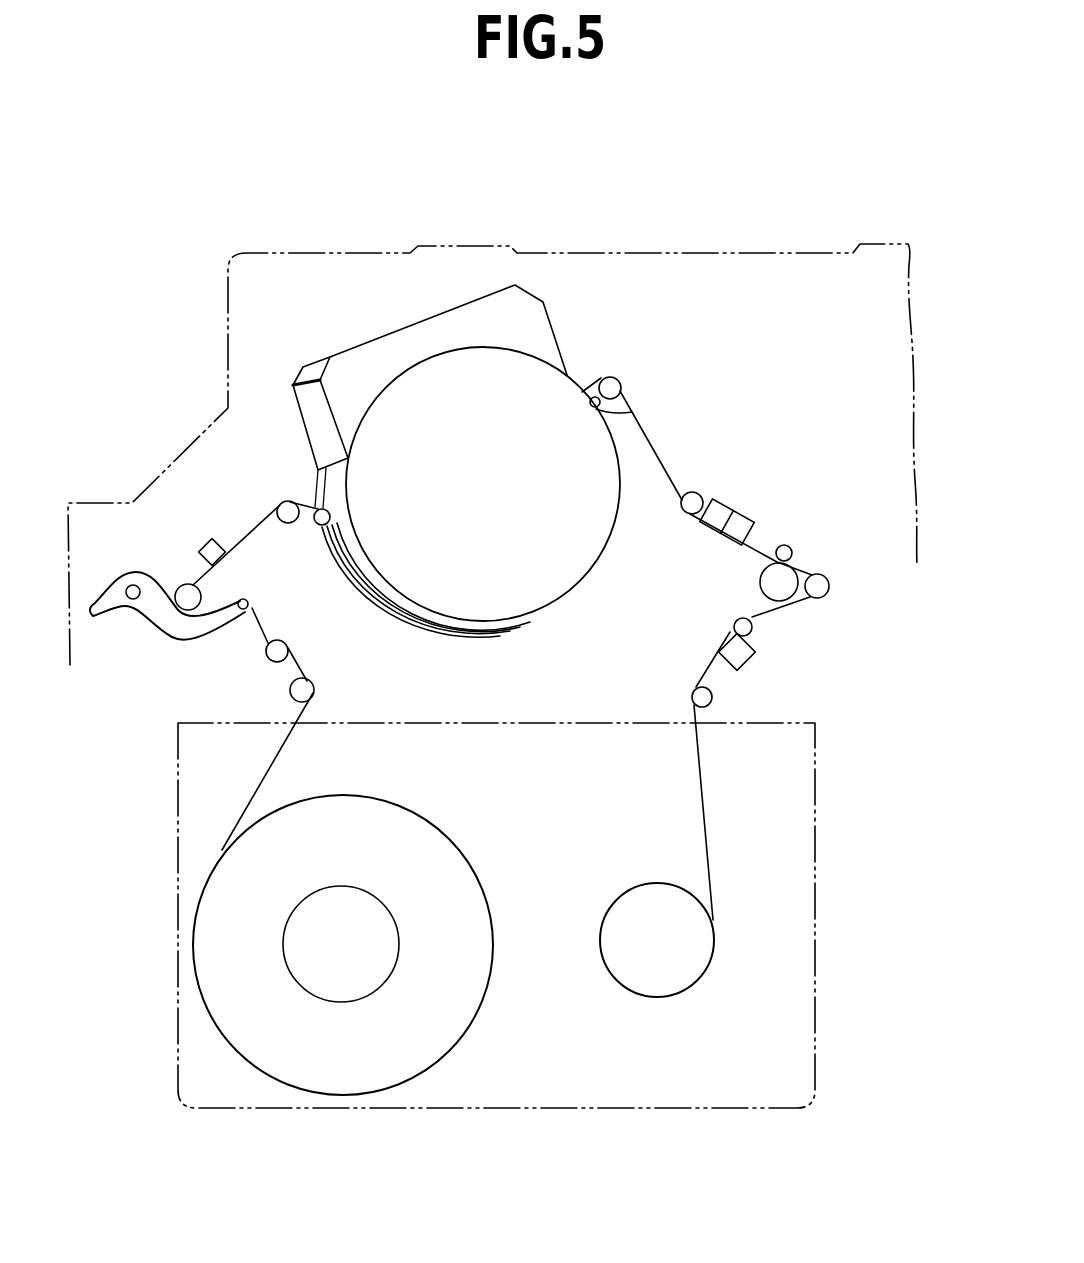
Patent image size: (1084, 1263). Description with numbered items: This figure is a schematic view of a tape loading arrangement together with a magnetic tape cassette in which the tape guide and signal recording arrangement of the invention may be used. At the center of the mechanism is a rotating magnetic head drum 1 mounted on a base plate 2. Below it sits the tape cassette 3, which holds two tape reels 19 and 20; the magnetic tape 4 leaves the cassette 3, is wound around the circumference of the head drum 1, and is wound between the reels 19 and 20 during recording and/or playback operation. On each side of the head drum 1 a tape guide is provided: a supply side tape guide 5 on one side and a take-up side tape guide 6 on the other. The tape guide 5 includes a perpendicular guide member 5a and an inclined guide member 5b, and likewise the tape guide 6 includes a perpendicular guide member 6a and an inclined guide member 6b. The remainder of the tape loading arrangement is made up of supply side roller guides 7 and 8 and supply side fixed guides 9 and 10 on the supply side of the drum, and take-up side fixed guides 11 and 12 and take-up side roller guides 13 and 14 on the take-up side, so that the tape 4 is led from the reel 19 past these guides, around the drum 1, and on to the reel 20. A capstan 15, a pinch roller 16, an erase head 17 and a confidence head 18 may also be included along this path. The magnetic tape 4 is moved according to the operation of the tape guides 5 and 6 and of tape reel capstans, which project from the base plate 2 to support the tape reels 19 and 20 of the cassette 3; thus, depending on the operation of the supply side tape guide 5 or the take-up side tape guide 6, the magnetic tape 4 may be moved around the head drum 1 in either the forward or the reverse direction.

The rotating magnetic head drum 1 is at (563, 405).
The base plate 2 is at (822, 250).
The tape cassette 3 is at (818, 890).
The magnetic tape 4 is at (708, 836).
The tape guide 5 is at (264, 473).
The perpendicular guide member 5a is at (290, 505).
The inclined guide member 5b is at (316, 508).
The tape guide 6 is at (663, 373).
The perpendicular guide member 6a is at (620, 380).
The inclined guide member 6b is at (598, 409).
The supply side roller guide 7 is at (290, 689).
The supply side roller guide 8 is at (182, 588).
The supply side fixed guide 9 is at (267, 651).
The supply side fixed guide 10 is at (252, 604).
The take-up side fixed guide 11 is at (696, 492).
The take-up side fixed guide 12 is at (753, 625).
The take-up side roller guide 13 is at (826, 583).
The take-up side roller guide 14 is at (693, 696).
The capstan 15 is at (788, 546).
The pinch roller 16 is at (772, 578).
The erase head 17 is at (207, 545).
The confidence head 18 is at (748, 657).
The tape reel 19 is at (370, 920).
The tape reel 20 is at (633, 917).